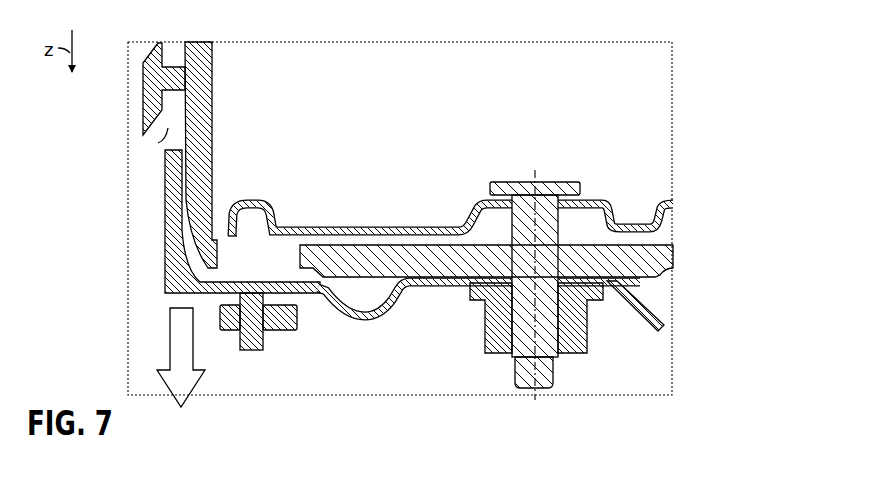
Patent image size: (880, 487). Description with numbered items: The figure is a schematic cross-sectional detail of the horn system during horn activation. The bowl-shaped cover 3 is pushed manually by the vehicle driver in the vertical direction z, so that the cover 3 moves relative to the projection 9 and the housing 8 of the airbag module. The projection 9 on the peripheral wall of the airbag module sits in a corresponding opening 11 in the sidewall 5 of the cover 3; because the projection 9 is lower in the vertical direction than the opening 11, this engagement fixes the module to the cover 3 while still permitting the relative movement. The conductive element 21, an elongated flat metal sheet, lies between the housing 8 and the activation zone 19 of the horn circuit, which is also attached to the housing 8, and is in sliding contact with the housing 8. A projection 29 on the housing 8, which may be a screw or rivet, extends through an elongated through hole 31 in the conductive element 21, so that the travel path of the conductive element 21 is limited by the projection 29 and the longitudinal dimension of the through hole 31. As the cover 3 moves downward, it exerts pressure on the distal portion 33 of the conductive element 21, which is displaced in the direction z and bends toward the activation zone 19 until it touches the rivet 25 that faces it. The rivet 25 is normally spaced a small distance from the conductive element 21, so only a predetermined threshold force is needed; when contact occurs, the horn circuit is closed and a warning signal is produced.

The cover 3 is at (163, 213).
The sidewall 5 is at (165, 268).
The housing 8 is at (382, 258).
The projection 9 is at (150, 110).
The opening 11 is at (158, 143).
The activation zone 19 is at (228, 340).
The conductive element 21 is at (333, 305).
The rivet 25 is at (257, 340).
The projection 29 is at (545, 366).
The through hole 31 is at (463, 293).
The distal portion 33 is at (200, 293).